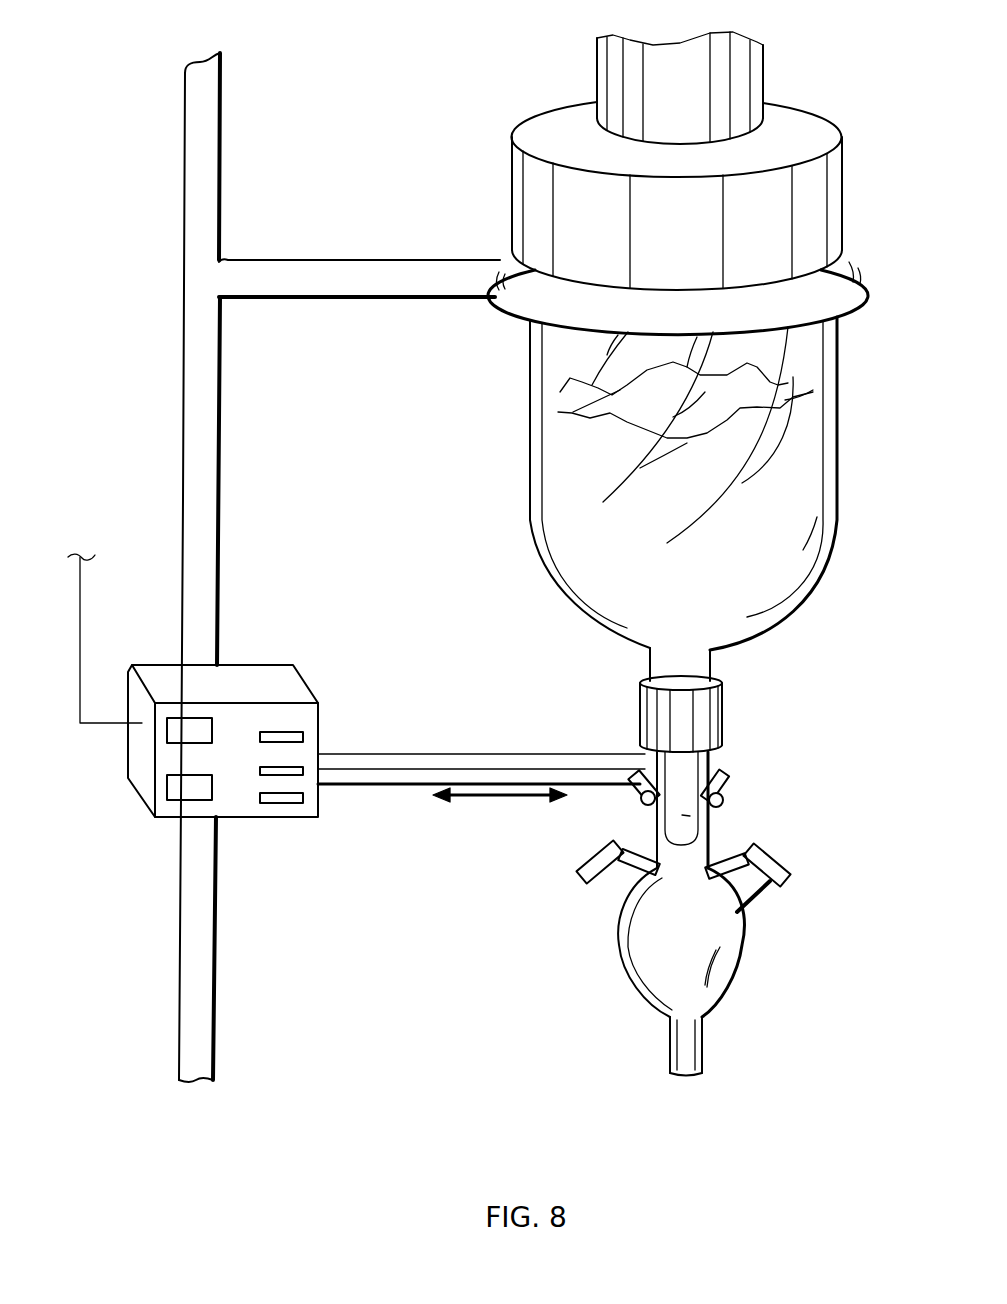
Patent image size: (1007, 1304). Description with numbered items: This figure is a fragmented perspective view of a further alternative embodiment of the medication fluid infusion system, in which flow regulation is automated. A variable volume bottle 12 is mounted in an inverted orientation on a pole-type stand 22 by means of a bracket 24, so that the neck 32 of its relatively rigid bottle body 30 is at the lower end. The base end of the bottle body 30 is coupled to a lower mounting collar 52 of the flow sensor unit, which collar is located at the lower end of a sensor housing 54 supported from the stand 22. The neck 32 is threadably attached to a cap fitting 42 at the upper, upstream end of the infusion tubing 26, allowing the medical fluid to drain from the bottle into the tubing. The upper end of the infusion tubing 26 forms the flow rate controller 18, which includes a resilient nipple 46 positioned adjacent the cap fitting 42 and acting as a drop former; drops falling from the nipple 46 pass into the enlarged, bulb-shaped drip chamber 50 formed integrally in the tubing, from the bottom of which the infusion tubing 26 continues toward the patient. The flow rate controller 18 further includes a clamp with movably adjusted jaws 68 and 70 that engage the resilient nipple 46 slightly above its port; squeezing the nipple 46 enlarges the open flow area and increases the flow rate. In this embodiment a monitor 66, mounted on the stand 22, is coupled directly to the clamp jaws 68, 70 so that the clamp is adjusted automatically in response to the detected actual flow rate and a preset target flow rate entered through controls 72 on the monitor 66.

The variable volume bottle 12 is at (795, 486).
The flow rate controller 18 is at (593, 742).
The stand 22 is at (190, 355).
The bracket 24 is at (403, 265).
The infusion tubing 26 is at (702, 1040).
The bottle body 30 is at (530, 462).
The neck 32 is at (693, 663).
The cap fitting 42 is at (717, 720).
The resilient nipple 46 is at (720, 827).
The drip chamber 50 is at (645, 983).
The mounting collar 52 is at (833, 210).
The sensor housing 54 is at (767, 65).
The monitor 66 is at (260, 670).
The clamp jaw 68 is at (647, 803).
The clamp jaw 70 is at (725, 795).
The controls 72 is at (258, 797).